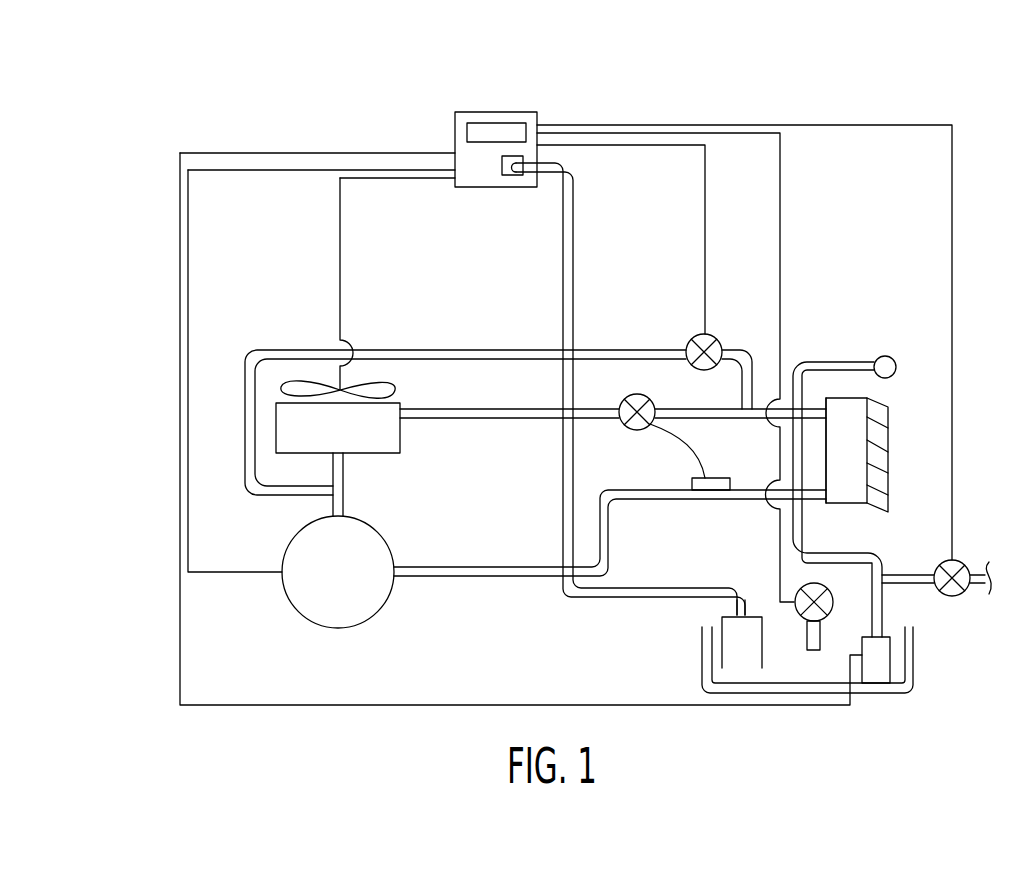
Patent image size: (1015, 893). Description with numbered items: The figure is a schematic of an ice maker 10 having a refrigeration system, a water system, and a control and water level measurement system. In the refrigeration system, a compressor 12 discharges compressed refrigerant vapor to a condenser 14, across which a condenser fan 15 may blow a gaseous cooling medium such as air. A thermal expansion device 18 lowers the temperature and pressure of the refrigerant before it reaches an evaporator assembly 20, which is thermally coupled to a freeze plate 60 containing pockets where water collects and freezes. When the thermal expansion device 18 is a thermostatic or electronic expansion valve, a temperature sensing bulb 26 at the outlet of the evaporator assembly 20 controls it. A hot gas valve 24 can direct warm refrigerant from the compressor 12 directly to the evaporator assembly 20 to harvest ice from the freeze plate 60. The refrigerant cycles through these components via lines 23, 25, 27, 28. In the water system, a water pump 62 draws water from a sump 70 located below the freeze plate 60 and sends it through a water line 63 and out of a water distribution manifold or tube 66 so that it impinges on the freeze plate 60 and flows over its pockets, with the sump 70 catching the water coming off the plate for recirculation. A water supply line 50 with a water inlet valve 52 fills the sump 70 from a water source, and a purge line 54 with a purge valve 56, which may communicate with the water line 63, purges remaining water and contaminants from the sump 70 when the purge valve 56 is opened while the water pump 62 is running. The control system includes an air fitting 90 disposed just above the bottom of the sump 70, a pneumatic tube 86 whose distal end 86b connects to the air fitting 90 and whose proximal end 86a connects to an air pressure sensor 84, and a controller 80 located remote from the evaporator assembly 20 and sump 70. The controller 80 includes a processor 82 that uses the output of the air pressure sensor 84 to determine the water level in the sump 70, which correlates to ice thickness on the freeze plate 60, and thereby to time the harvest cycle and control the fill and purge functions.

The ice maker 10 is at (855, 75).
The compressor 12 is at (296, 613).
The condenser 14 is at (400, 443).
The condenser fan 15 is at (395, 387).
The thermal expansion device 18 is at (633, 396).
The evaporator assembly 20 is at (845, 500).
The refrigerant line 23 is at (245, 437).
The hot gas valve 24 is at (713, 335).
The refrigerant line 25 is at (343, 507).
The temperature sensing bulb 26 is at (714, 478).
The refrigerant line 27 is at (477, 409).
The refrigerant line 28 is at (440, 577).
The water supply line 50 is at (821, 640).
The water inlet valve 52 is at (826, 588).
The purge line 54 is at (903, 575).
The purge valve 56 is at (965, 564).
The freeze plate 60 is at (888, 440).
The water pump 62 is at (876, 668).
The water line 63 is at (826, 362).
The water distribution manifold or tube 66 is at (893, 357).
The sump 70 is at (913, 645).
The controller 80 is at (505, 112).
The processor 82 is at (480, 123).
The air pressure sensor 84 is at (503, 175).
The pneumatic tube 86 is at (574, 240).
The proximal end 86a is at (527, 180).
The distal end 86b is at (748, 606).
The air fitting 90 is at (722, 627).